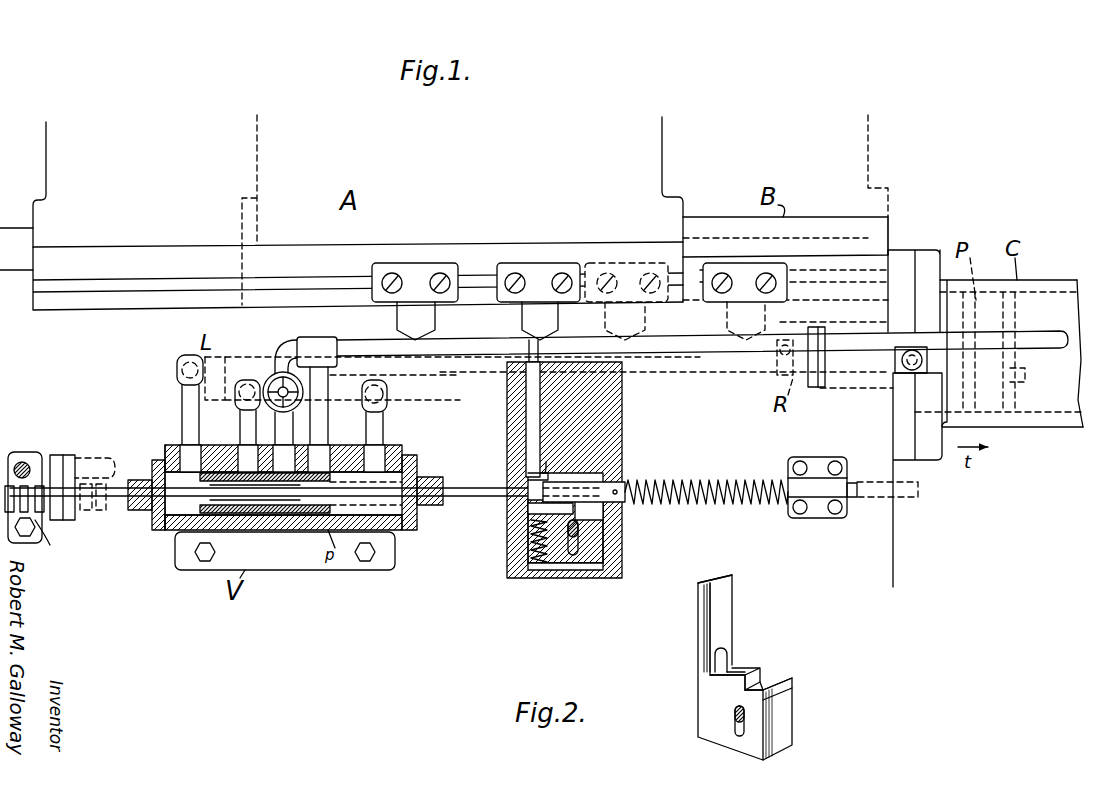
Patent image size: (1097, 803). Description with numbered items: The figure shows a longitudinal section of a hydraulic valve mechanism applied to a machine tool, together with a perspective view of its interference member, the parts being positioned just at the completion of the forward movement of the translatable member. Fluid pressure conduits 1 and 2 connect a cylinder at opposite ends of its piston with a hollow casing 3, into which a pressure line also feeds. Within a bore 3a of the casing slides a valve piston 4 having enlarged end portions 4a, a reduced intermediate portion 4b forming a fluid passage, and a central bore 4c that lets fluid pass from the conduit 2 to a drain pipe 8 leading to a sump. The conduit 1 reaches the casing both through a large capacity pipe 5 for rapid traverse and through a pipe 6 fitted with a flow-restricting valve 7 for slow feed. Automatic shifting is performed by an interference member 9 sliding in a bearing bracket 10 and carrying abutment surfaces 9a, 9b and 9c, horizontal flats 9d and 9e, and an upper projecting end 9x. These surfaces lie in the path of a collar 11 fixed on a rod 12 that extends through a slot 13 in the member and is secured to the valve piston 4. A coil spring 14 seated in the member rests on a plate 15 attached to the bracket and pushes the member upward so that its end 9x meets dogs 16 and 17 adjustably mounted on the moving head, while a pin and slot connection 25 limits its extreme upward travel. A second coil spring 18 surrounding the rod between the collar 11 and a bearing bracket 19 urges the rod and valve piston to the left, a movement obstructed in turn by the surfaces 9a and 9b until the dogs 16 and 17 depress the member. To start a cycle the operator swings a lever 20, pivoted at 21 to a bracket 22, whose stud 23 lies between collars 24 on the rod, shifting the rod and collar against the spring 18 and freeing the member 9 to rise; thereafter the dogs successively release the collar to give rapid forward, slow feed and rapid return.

In FIG. 1, the fluid pressure conduit 1 is at (352, 342).
In FIG. 1, the fluid pressure conduit 2 is at (180, 402).
In FIG. 1, the hollow casing 3 is at (308, 530).
In FIG. 1, the bore 3a is at (418, 517).
In FIG. 1, the valve piston 4 is at (175, 535).
In FIG. 1, the enlarged end portions 4a is at (170, 458).
In FIG. 1, the reduced intermediate portion 4b is at (225, 520).
In FIG. 1, the central bore 4c is at (152, 480).
In FIG. 1, the large capacity pipe 5 is at (330, 395).
In FIG. 1, the pipe 6 is at (264, 420).
In FIG. 1, the flow-restricting valve 7 is at (288, 397).
In FIG. 1, the drain pipe 8 is at (386, 420).
In FIG. 1, the interference member 9 is at (605, 535).
In FIG. 2, the interference member 9 is at (698, 690).
In FIG. 2, the abutment surface 9a is at (785, 705).
In FIG. 1, the abutment surface 9b is at (580, 510).
In FIG. 2, the abutment surface 9b is at (758, 682).
In FIG. 1, the abutment surface 9c is at (540, 470).
In FIG. 2, the abutment surface 9c is at (735, 656).
In FIG. 2, the horizontal flat 9d is at (775, 690).
In FIG. 2, the horizontal flat 9e is at (752, 672).
In FIG. 1, the upper projecting end 9x is at (548, 344).
In FIG. 2, the upper projecting end 9x is at (735, 578).
In FIG. 1, the bearing bracket 10 is at (622, 441).
In FIG. 1, the collar 11 is at (627, 485).
In FIG. 1, the rod 12 is at (488, 485).
In FIG. 1, the slot 13 is at (530, 508).
In FIG. 2, the slot 13 is at (715, 662).
In FIG. 1, the coil spring 14 is at (540, 565).
In FIG. 1, the plate 15 is at (590, 572).
In FIG. 1, the dog 16 is at (528, 301).
In FIG. 1, the dog 17 is at (646, 301).
In FIG. 1, the coil spring 18 is at (735, 476).
In FIG. 1, the bearing bracket 19 is at (815, 463).
In FIG. 1, the lever 20 is at (63, 460).
In FIG. 1, the pivot 21 is at (90, 460).
In FIG. 1, the bracket 22 is at (78, 512).
In FIG. 1, the stud 23 is at (28, 480).
In FIG. 1, the collars 24 is at (54, 538).
In FIG. 1, the pin and slot connection 25 is at (580, 545).
In FIG. 2, the pin and slot connection 25 is at (735, 722).